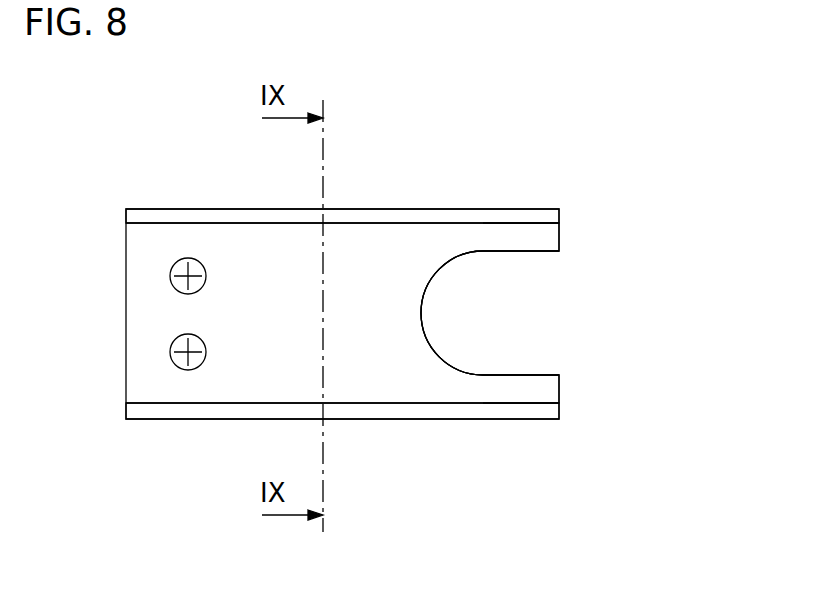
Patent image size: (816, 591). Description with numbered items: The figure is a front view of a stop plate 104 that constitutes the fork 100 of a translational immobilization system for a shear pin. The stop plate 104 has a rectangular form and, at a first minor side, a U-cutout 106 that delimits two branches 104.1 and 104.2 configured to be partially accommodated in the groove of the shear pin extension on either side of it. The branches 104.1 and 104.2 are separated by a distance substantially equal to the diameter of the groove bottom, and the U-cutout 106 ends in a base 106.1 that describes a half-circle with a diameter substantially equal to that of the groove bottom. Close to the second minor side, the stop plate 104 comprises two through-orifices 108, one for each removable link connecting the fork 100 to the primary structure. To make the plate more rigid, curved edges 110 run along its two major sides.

The fork 100 is at (423, 158).
The stop plate 104 is at (246, 273).
The first branch 104.1 is at (537, 238).
The second branch 104.2 is at (545, 387).
The U-cutout 106 is at (503, 320).
The base 106.1 is at (421, 313).
The through-orifice 108 is at (170, 276).
The curved edges 110 is at (365, 209).